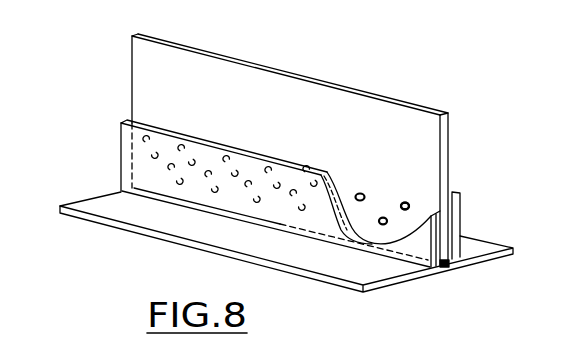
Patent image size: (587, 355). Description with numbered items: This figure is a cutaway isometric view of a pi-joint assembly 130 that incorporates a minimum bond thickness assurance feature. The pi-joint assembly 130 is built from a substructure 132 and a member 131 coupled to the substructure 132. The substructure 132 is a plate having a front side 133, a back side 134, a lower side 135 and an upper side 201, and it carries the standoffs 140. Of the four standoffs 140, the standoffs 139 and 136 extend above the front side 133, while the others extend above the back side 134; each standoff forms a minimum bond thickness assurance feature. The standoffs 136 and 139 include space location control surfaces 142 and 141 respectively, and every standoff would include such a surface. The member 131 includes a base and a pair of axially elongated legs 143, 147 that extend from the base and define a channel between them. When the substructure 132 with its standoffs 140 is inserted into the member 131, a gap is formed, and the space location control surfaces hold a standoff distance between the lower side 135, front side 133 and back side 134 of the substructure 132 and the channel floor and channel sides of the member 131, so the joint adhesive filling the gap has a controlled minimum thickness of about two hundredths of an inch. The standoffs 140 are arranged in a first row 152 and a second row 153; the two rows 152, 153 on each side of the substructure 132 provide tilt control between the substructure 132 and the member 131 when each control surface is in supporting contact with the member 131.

The pi-joint assembly 130 is at (82, 177).
The member 131 is at (128, 218).
The substructure 132 is at (147, 62).
The front side 133 is at (206, 68).
The back side 134 is at (287, 54).
The lower side 135 is at (447, 267).
The standoff 136 is at (388, 225).
The standoff 139 is at (406, 203).
The standoffs 140 is at (332, 158).
The space location control surface 141 is at (402, 207).
The space location control surface 142 is at (380, 216).
The axially elongated leg 143 is at (126, 142).
The axially elongated leg 147 is at (462, 203).
The first row 152 is at (147, 178).
The second row 153 is at (131, 157).
The upper side 201 is at (328, 82).